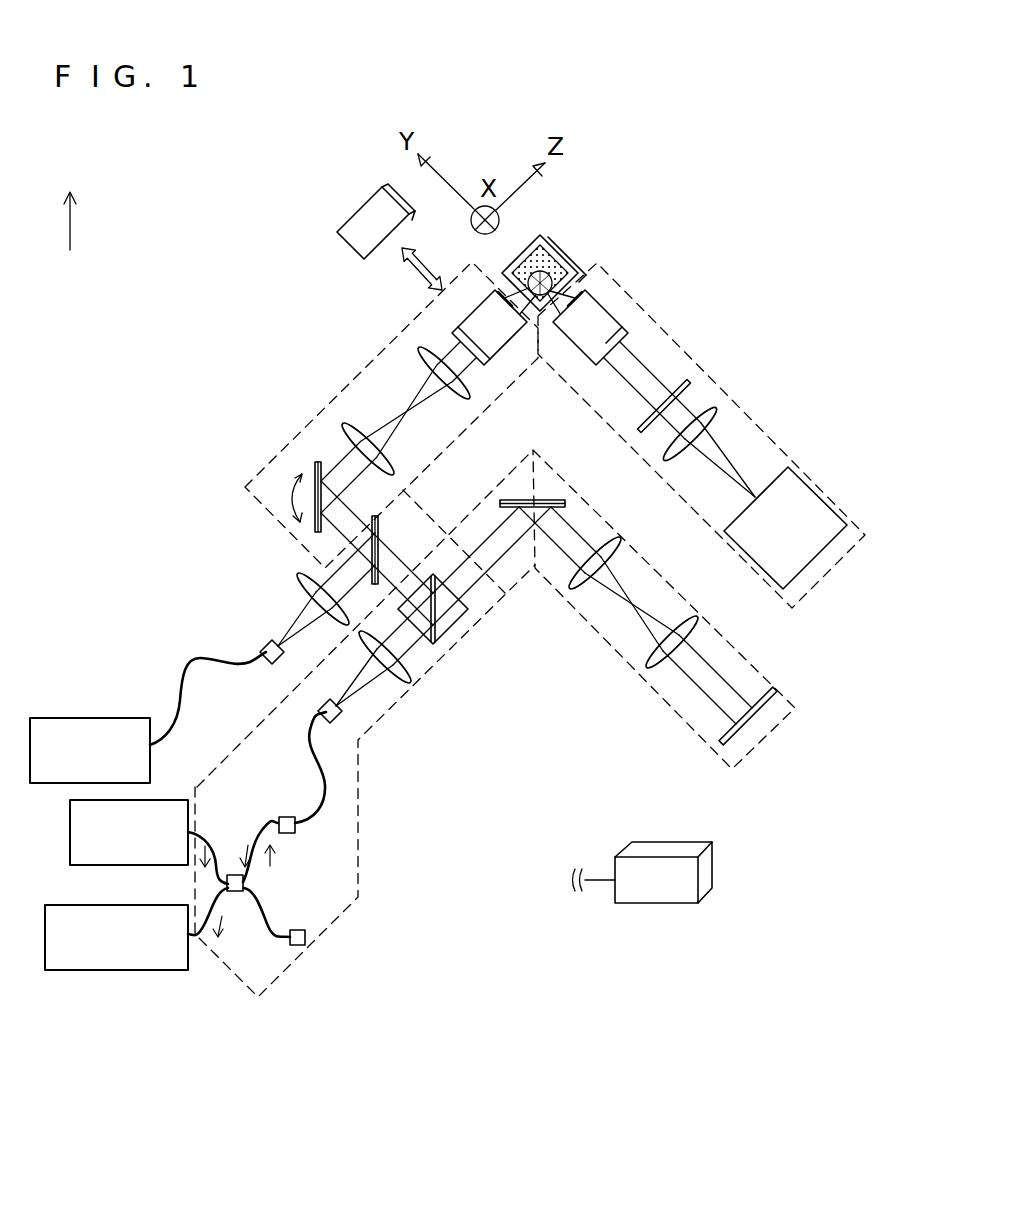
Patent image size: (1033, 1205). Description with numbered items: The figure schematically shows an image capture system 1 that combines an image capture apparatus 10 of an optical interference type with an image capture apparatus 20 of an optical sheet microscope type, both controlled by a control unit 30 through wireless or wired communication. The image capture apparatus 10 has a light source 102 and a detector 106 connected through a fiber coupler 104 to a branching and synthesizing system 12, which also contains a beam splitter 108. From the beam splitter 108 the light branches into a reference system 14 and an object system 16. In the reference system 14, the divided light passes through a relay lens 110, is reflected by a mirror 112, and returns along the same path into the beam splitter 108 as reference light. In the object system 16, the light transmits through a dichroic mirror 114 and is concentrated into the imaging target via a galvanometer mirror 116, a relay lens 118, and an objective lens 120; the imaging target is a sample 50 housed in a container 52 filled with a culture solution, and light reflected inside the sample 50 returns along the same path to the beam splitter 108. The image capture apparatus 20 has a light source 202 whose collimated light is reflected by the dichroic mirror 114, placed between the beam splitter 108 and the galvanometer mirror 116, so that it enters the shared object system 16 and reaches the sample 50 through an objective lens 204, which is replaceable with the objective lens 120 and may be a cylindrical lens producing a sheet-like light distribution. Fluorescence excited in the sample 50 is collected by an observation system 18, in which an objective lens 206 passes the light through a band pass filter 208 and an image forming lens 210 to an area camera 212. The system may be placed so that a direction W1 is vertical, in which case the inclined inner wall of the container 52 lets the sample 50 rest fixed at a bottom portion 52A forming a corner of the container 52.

The image capture system 1 is at (813, 204).
The image capture apparatus 10 is at (481, 722).
The branching and synthesizing system 12 is at (362, 832).
The reference system 14 is at (755, 663).
The object system 16 is at (306, 428).
The observation system 18 is at (768, 433).
The image capture apparatus 20 is at (211, 386).
The control unit 30 is at (662, 845).
The sample 50 is at (539, 246).
The container 52 is at (547, 244).
The bottom portion 52A is at (541, 314).
The light source 102 is at (184, 799).
The fiber coupler 104 is at (274, 817).
The detector 106 is at (115, 971).
The beam splitter 108 is at (462, 617).
The relay lens 110 is at (611, 526).
The mirror 112 is at (776, 692).
The dichroic mirror 114 is at (380, 518).
The galvanometer mirror 116 is at (313, 530).
The relay lens 118 is at (405, 371).
The objective lens 120 is at (462, 332).
The light source 202 is at (80, 717).
The objective lens 204 is at (357, 212).
The objective lens 206 is at (600, 300).
The band pass filter 208 is at (688, 383).
The image forming lens 210 is at (718, 402).
The area camera 212 is at (818, 485).
The direction W1 is at (74, 230).